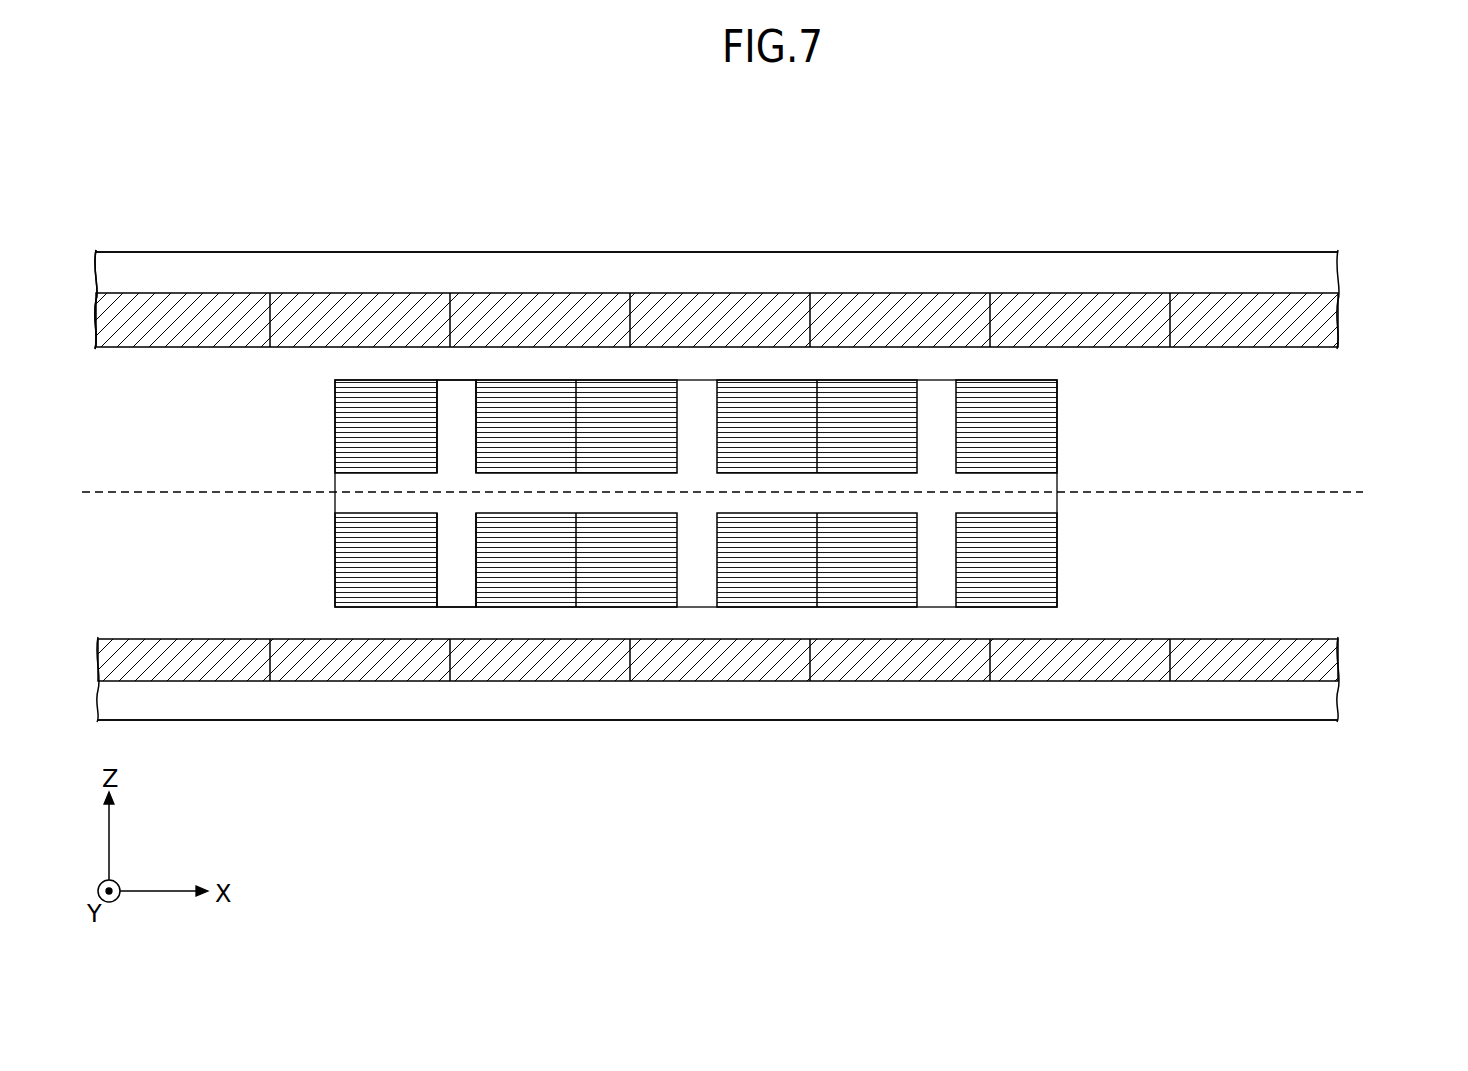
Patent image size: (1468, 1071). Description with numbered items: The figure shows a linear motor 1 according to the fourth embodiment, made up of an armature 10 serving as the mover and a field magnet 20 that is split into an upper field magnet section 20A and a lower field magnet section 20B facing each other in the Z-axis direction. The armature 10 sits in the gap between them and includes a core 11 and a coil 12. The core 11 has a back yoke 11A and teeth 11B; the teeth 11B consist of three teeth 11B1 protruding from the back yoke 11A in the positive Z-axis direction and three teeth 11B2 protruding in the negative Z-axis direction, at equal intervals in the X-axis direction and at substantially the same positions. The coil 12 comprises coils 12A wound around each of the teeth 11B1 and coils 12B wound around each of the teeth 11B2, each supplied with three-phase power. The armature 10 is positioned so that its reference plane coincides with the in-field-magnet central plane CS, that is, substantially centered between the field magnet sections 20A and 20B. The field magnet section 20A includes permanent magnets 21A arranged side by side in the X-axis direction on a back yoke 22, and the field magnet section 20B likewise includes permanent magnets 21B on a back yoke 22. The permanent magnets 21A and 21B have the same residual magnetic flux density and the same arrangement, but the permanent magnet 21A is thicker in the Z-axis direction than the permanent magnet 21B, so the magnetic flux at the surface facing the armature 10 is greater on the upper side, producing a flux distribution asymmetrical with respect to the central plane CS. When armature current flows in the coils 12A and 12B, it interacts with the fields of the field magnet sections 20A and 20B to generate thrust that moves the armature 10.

The linear motor 1 is at (130, 100).
The armature 10 is at (728, 344).
The core 11 is at (372, 344).
The back yoke 11A is at (363, 487).
The teeth 11B is at (403, 371).
The teeth 11B1 is at (450, 433).
The teeth 11B2 is at (463, 552).
The coil 12 is at (766, 371).
The coil 12A is at (505, 398).
The coil 12B is at (560, 532).
The field magnet 20 is at (773, 489).
The field magnet section 20A is at (752, 322).
The field magnet section 20B is at (752, 663).
The permanent magnet 21A is at (720, 320).
The permanent magnet 21B is at (308, 667).
The back yoke 22 is at (825, 278).
The in-field-magnet central plane CS is at (118, 492).